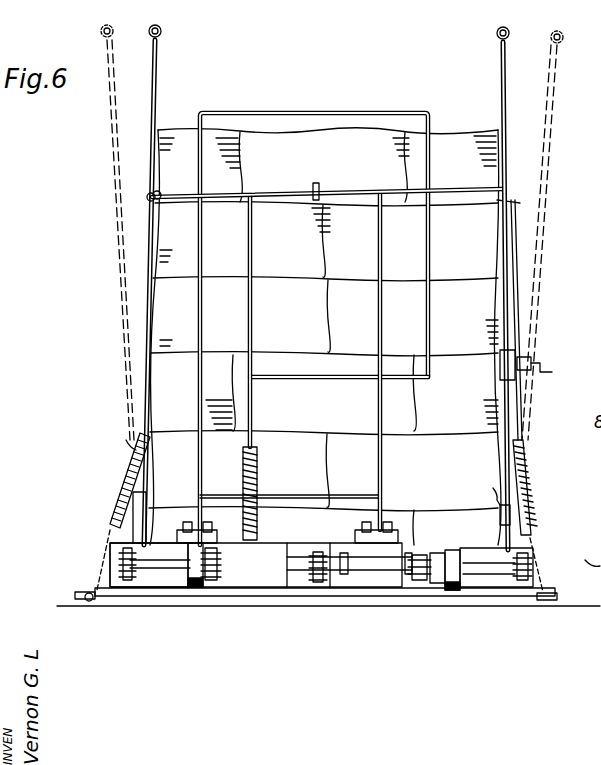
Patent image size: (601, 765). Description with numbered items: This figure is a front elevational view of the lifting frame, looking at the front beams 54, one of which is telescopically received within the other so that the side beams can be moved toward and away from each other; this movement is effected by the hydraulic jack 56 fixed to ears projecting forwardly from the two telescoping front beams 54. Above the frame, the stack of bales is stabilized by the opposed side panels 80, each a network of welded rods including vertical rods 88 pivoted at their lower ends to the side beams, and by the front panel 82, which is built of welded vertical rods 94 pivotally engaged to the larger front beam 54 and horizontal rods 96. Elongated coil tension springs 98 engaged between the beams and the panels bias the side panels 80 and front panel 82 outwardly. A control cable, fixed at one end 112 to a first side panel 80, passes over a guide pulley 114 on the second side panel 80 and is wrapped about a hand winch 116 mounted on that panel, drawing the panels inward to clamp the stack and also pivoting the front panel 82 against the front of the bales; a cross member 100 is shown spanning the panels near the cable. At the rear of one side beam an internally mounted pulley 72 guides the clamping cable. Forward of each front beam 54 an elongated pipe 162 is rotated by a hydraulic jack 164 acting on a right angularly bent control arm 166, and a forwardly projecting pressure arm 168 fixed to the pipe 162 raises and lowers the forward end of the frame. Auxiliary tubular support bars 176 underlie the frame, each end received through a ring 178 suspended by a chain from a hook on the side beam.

The front beam 54 is at (288, 548).
The hydraulic jack 56 is at (336, 600).
The internally mounted pulley 72 is at (590, 556).
The side panel 80 is at (553, 142).
The front panel 82 is at (380, 100).
The vertical rod 88 is at (520, 395).
The vertical rod 94 is at (380, 426).
The horizontal rod 96 is at (278, 383).
The coil tension spring 98 is at (256, 465).
The horizontal bar 100 is at (267, 191).
The cable end 112 is at (151, 203).
The guide pulley 114 is at (520, 203).
The hand winch 116 is at (532, 362).
The elongated pipe 162 is at (160, 563).
The hydraulic jack 164 is at (497, 497).
The control arm 166 is at (510, 513).
The pressure arm 168 is at (457, 577).
The tubular support bar 176 is at (490, 600).
The ring 178 is at (550, 597).